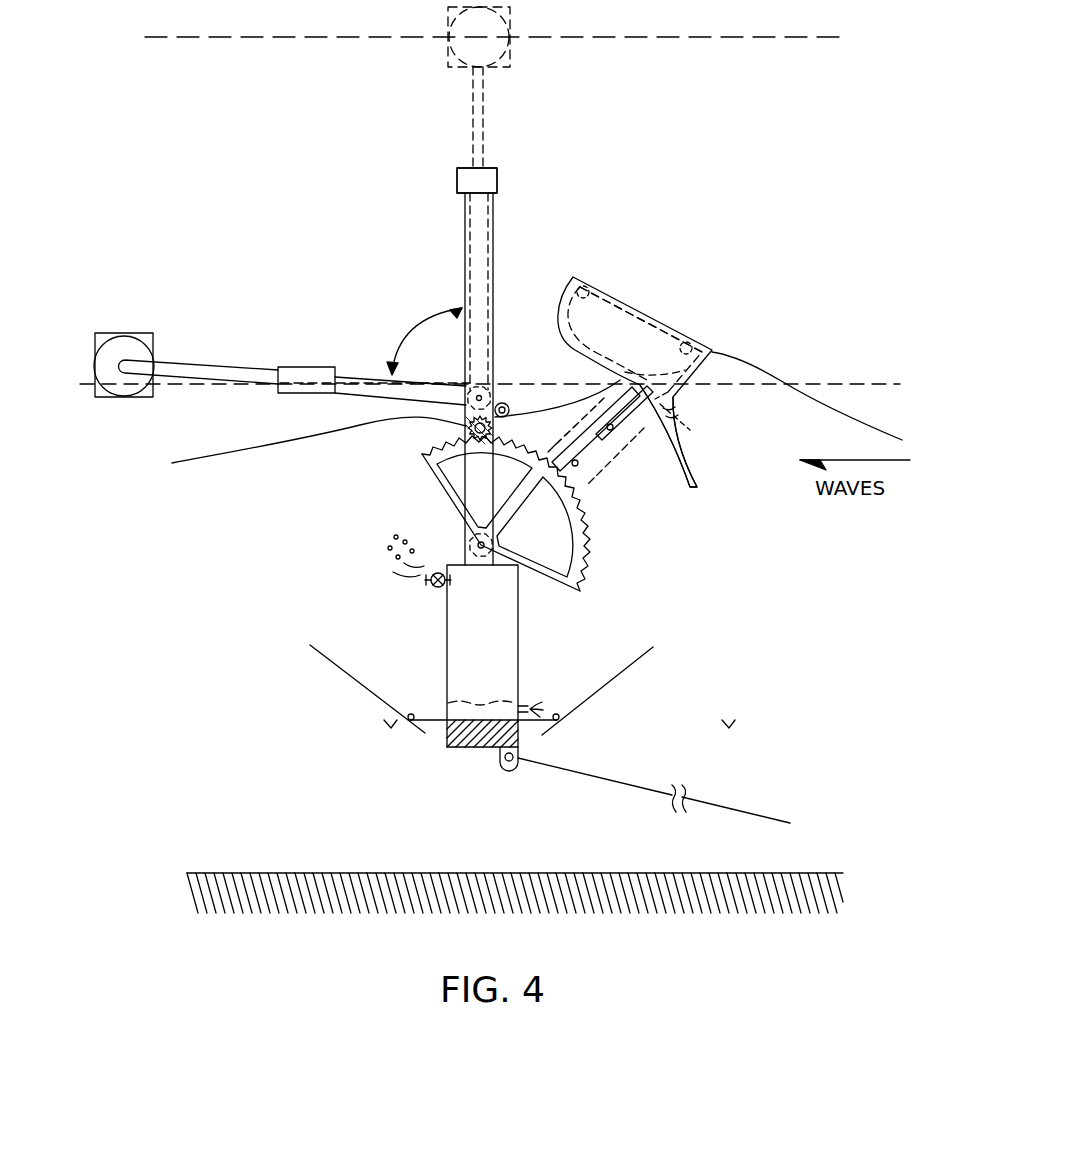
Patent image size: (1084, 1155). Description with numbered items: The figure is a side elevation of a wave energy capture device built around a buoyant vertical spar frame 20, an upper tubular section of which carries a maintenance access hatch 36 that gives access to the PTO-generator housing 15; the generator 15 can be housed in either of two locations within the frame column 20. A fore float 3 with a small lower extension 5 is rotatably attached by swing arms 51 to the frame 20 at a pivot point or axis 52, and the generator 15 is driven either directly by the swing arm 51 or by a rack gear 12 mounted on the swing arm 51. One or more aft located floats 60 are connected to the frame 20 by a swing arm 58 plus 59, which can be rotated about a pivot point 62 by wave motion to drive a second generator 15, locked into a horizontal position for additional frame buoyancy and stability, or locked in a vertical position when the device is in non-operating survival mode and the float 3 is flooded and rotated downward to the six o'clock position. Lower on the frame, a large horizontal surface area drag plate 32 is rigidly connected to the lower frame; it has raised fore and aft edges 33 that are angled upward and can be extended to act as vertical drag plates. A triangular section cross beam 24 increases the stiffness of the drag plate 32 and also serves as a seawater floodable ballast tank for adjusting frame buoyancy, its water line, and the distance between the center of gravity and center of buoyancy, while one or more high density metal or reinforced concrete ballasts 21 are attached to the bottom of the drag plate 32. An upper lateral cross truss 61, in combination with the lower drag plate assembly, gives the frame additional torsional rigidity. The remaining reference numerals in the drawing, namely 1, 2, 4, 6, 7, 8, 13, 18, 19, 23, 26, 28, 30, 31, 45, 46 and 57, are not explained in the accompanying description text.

The pivot / hinge connection 1 is at (675, 401).
The water surface line at float 2 is at (602, 362).
The fore float 3 is at (641, 325).
The float body 4 is at (630, 322).
The small lower extension 5 is at (690, 456).
The wave surface 6 is at (760, 365).
The float bottom edge 7 is at (640, 369).
The hinge 8 is at (683, 411).
The rack gear 12 is at (433, 449).
The pinion 13 is at (494, 430).
The generator 15 is at (493, 397).
The water surface 18 is at (198, 388).
The high water level 19 is at (677, 42).
The buoyant vertical spar frame 20 is at (494, 281).
The ballasts 21 is at (488, 750).
The piston 23 is at (487, 700).
The triangular section cross beam 24 is at (520, 597).
The air release valve 26 is at (432, 587).
The sea bed 28 is at (742, 872).
The outlet nozzle 30 is at (522, 701).
The anchor line 31 is at (720, 798).
The horizontal drag plate 32 is at (440, 717).
The raised fore and aft edges 33 is at (604, 690).
The maintenance access hatch 36 is at (457, 172).
The connecting rod 45 is at (636, 416).
The rod pivot pin 46 is at (612, 432).
The swing arms 51 is at (586, 442).
The pivot point or axis 52 is at (475, 545).
The float attachment eye 57 is at (586, 287).
The swing arm 58 is at (355, 367).
The swing arm 59 is at (472, 110).
The aft located floats 60 is at (447, 42).
The upper lateral cross truss 61 is at (497, 180).
The pivot point 62 is at (509, 410).